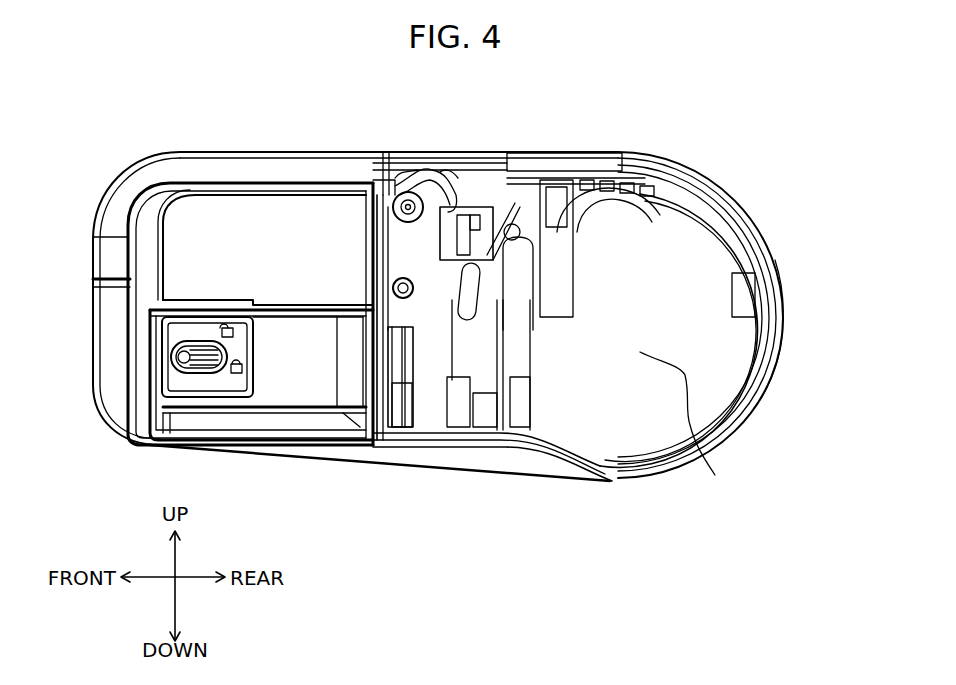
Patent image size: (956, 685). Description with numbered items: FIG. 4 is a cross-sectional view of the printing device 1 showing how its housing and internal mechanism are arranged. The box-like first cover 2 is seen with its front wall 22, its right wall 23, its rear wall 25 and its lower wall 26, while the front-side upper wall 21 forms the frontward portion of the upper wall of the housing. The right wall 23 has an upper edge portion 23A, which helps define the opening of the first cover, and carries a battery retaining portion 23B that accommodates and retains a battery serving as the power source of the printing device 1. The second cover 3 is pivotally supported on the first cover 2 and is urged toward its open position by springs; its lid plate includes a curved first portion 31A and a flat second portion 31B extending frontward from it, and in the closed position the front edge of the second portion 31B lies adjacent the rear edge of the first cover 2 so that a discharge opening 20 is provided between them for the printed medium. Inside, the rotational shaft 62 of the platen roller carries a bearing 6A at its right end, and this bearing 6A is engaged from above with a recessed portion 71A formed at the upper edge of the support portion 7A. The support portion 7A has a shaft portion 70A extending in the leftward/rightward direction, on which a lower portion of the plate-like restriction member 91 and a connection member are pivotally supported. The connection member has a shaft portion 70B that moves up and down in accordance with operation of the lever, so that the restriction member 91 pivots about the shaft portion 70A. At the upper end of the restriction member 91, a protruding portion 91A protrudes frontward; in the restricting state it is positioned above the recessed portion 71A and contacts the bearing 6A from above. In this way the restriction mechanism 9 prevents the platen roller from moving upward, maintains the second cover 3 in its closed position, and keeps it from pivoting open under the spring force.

The printing device 1 is at (703, 127).
The first cover 2 is at (141, 151).
The second cover 3 is at (584, 150).
The restriction mechanism 9 is at (436, 185).
The discharge opening 20 is at (380, 150).
The front-side upper wall 21 is at (270, 151).
The front wall 22 is at (78, 335).
The right wall 23 is at (705, 437).
The upper edge portion 23A is at (640, 200).
The battery retaining portion 23B is at (265, 348).
The rear wall 25 is at (765, 368).
The lower wall 26 is at (470, 482).
The first portion 31A is at (724, 189).
The second portion 31B is at (551, 152).
The rotational shaft 62 is at (397, 194).
The bearing 6A is at (372, 208).
The shaft portion 70A is at (412, 300).
The shaft portion 70B is at (478, 274).
The recessed portion 71A is at (370, 217).
The support portion 7A is at (400, 248).
The restriction member 91 is at (448, 182).
The protruding portion 91A is at (416, 176).